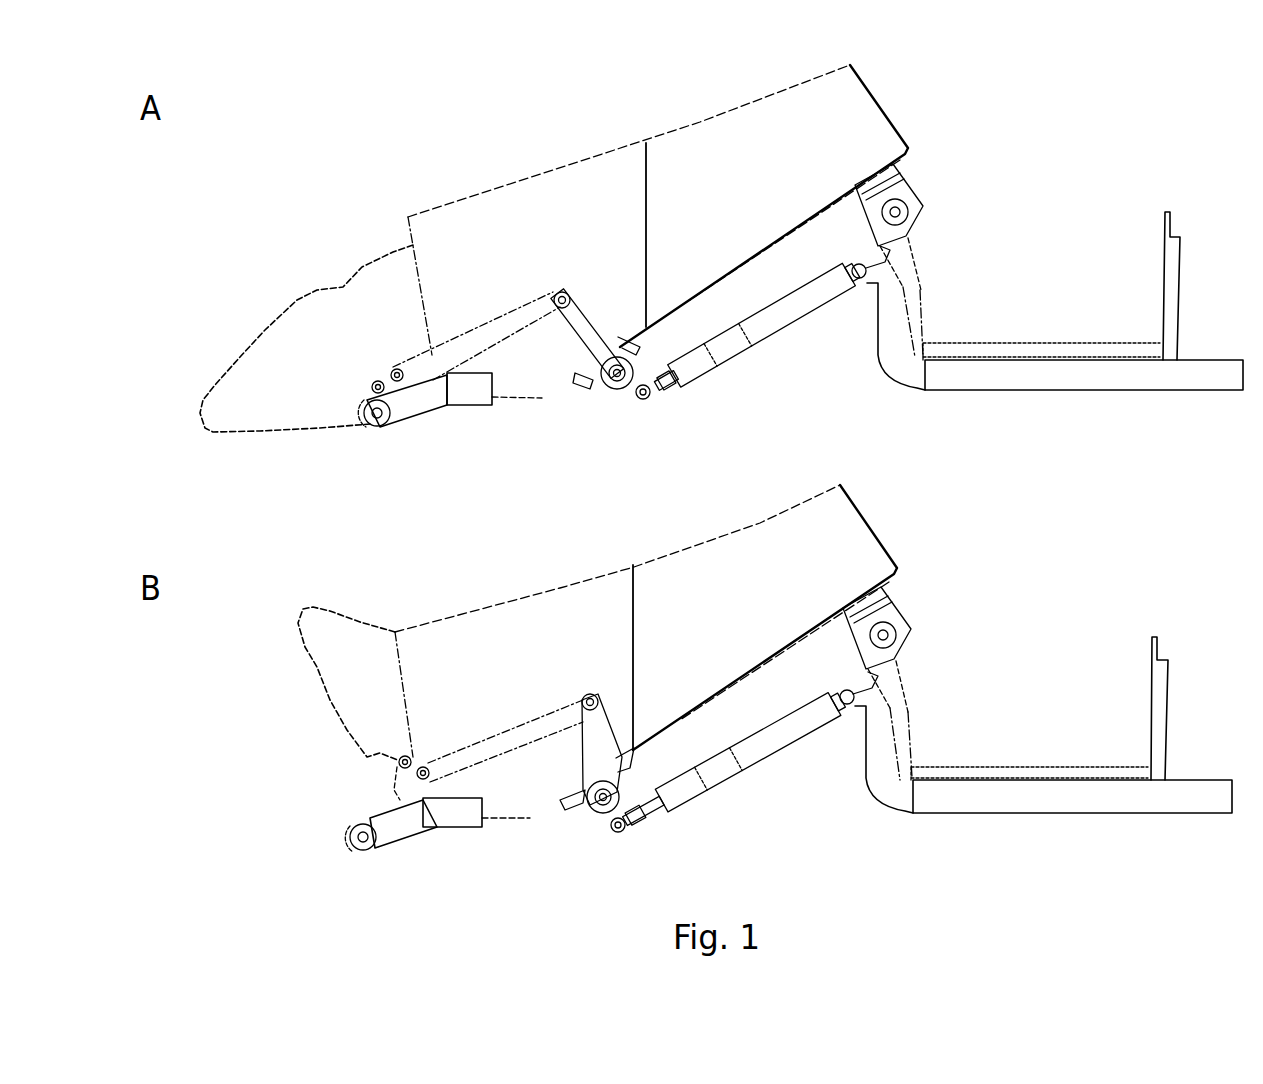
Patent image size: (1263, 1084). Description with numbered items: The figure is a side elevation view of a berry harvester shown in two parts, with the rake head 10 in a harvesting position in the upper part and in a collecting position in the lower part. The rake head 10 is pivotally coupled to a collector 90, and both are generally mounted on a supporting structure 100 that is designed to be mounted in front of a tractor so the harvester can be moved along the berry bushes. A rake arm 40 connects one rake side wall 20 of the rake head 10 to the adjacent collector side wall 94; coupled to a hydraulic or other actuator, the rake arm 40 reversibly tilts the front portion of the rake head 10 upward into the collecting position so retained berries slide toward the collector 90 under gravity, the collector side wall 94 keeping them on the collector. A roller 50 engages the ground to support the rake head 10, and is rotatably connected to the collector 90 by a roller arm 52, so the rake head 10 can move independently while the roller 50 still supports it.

The rake head 10 is at (268, 292).
The rake side wall 20 is at (306, 522).
The rake arm 40 is at (537, 310).
The roller 50 is at (373, 424).
The roller arm 52 is at (447, 380).
The collector 90 is at (508, 154).
The collector side wall 94 is at (659, 411).
The supporting structure 100 is at (1020, 286).